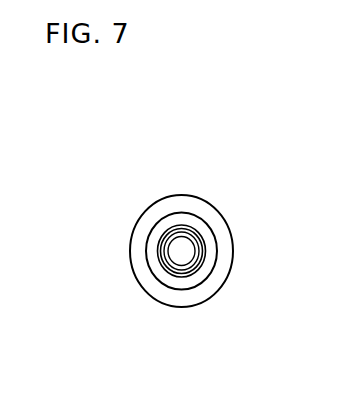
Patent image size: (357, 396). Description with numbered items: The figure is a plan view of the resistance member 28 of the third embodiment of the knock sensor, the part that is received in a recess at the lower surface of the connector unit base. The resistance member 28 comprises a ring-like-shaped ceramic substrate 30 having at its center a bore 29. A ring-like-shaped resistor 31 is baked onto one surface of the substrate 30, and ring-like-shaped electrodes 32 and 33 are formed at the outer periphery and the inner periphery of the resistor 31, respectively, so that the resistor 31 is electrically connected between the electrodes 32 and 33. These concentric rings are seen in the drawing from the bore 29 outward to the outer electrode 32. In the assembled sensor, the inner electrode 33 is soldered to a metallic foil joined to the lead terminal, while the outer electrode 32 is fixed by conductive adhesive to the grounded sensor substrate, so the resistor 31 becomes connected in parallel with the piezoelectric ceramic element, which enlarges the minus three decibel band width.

The resistance member 28 is at (118, 210).
The bore 29 is at (174, 254).
The ceramic substrate 30 is at (161, 302).
The resistor 31 is at (209, 242).
The electrode 32 is at (222, 272).
The electrode 33 is at (183, 230).